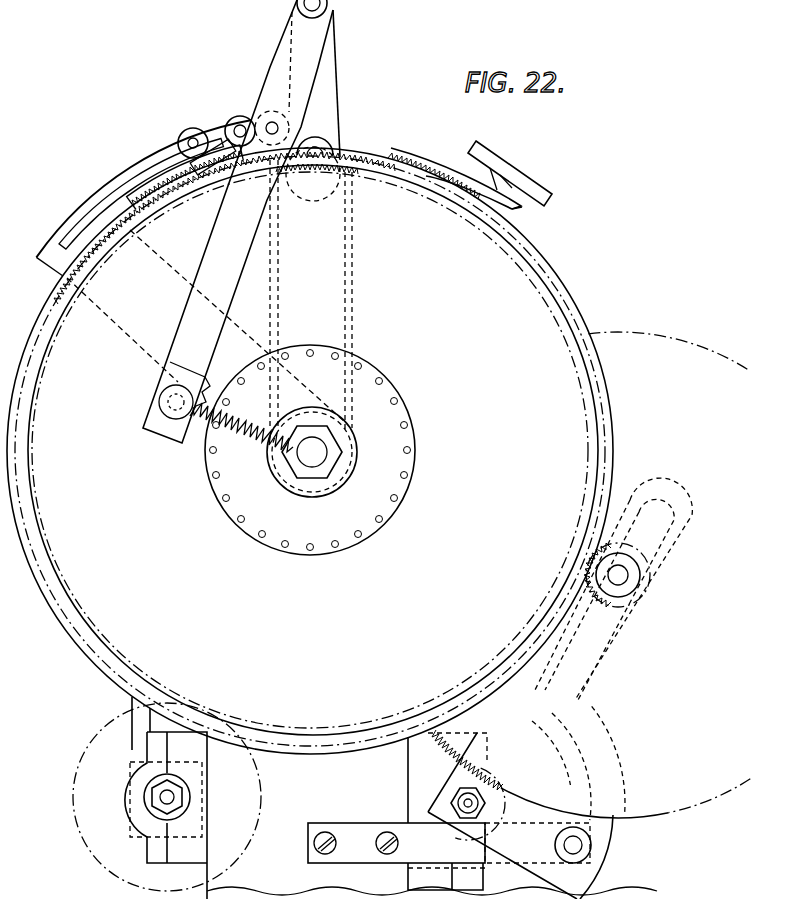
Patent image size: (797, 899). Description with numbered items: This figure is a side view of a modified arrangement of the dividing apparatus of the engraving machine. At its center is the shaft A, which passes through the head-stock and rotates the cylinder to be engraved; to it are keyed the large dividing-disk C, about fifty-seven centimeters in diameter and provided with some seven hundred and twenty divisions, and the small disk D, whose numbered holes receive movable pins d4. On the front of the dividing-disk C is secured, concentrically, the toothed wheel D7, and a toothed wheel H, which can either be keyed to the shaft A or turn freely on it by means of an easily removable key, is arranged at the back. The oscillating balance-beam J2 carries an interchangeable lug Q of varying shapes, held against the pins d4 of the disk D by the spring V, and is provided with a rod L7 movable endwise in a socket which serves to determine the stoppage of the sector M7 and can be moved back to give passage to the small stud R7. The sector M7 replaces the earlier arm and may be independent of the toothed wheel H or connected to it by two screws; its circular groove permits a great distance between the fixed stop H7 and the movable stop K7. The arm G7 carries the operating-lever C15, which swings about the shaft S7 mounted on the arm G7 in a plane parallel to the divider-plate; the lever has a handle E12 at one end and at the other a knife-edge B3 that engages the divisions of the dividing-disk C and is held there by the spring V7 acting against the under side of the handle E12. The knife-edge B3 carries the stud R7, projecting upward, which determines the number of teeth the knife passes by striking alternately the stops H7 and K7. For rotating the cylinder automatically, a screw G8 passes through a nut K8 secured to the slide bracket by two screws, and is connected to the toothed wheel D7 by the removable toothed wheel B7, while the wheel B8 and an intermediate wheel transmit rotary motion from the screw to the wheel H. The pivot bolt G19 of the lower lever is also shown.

The stud R7 is at (205, 148).
The movable stop K7 is at (195, 141).
The fixed stop H7 is at (243, 117).
The stop rod L7 is at (279, 128).
The shaft S7 is at (317, 150).
The operating-lever C15 is at (420, 160).
The handle E12 is at (530, 158).
The spring V7 is at (510, 210).
The sector M7 is at (87, 187).
The knife-edge B3 is at (217, 173).
The balance-beam J2 is at (238, 221).
The arm G7 is at (352, 285).
The lug Q is at (197, 430).
The spring V is at (247, 433).
The shaft A is at (312, 452).
The disk D is at (262, 515).
The pins d4 is at (335, 543).
The toothed wheel D7 is at (52, 560).
The toothed wheel H is at (54, 606).
The dividing-disk C is at (92, 650).
The toothed wheel B7 is at (112, 725).
The nut K8 is at (132, 738).
The screw G8 is at (167, 798).
The wheel B8 is at (457, 771).
The pivot bolt G19 is at (467, 803).